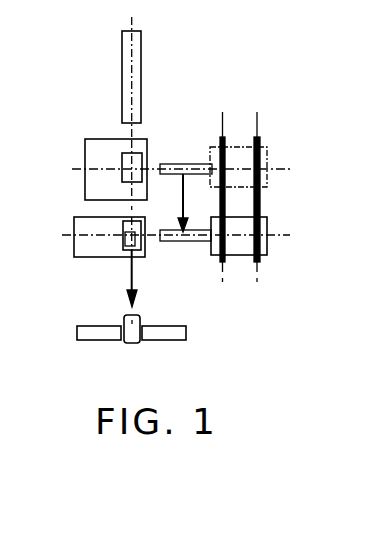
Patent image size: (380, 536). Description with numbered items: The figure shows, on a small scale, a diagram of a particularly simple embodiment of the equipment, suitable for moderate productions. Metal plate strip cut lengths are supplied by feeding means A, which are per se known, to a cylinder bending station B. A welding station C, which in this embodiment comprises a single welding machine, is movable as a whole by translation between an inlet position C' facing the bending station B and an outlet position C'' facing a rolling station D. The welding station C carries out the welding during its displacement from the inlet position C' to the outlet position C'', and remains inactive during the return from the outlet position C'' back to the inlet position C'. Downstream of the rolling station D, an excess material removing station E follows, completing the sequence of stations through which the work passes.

The feeding means A is at (130, 76).
The cylinder bending station B is at (100, 157).
The welding station C is at (319, 204).
The inlet position C' is at (238, 175).
The outlet position C'' is at (239, 270).
The rolling station D is at (92, 250).
The excess material removing station E is at (112, 333).